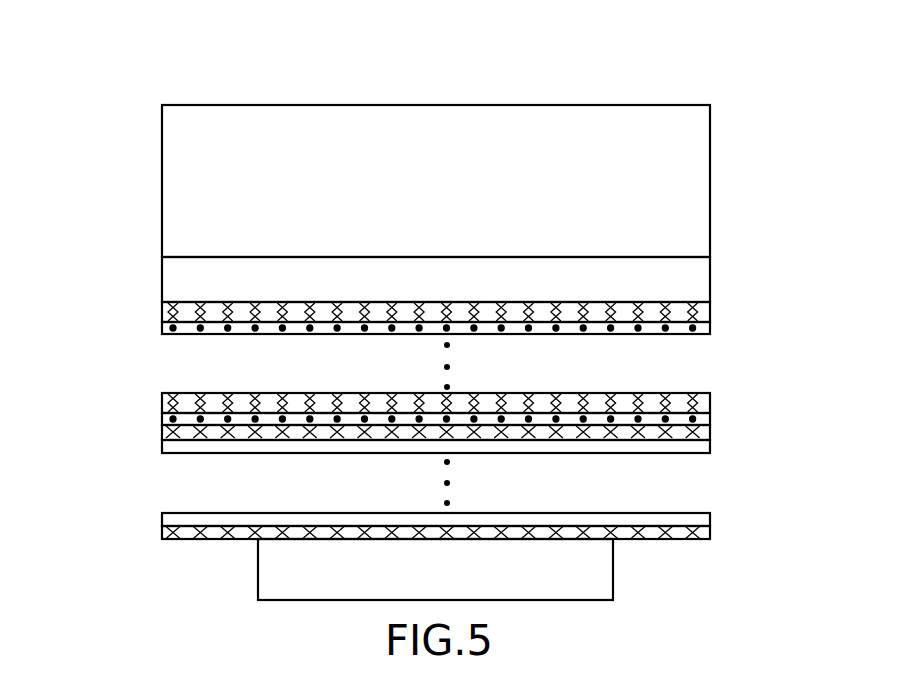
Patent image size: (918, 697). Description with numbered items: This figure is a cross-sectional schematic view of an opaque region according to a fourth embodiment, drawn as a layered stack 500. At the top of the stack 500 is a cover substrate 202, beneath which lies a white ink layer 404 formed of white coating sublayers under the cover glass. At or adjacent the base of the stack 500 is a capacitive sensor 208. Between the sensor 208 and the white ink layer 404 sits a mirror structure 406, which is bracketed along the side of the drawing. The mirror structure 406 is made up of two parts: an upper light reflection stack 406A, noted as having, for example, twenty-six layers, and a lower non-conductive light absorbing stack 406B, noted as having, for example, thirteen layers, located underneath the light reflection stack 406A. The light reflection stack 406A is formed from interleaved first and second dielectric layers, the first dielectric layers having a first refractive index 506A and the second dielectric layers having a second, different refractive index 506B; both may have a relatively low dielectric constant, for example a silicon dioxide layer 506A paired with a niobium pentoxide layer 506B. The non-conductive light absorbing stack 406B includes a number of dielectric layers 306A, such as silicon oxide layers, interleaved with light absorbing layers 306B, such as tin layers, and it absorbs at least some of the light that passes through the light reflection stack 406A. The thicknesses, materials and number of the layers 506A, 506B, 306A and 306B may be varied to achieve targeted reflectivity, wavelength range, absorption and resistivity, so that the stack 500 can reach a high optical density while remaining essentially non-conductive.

The stack 500 is at (121, 98).
The cover substrate 202 is at (417, 194).
The white ink layer 404 is at (417, 292).
The mirror structure 406 is at (819, 302).
The light reflection stack 406A is at (158, 425).
The non-conductive light absorbing stack 406B is at (158, 540).
The first dielectric layer 506A is at (710, 312).
The second dielectric layer 506B is at (710, 328).
The dielectric layer 306A is at (710, 432).
The light absorbing layer 306B is at (710, 446).
The capacitive sensor 208 is at (419, 594).